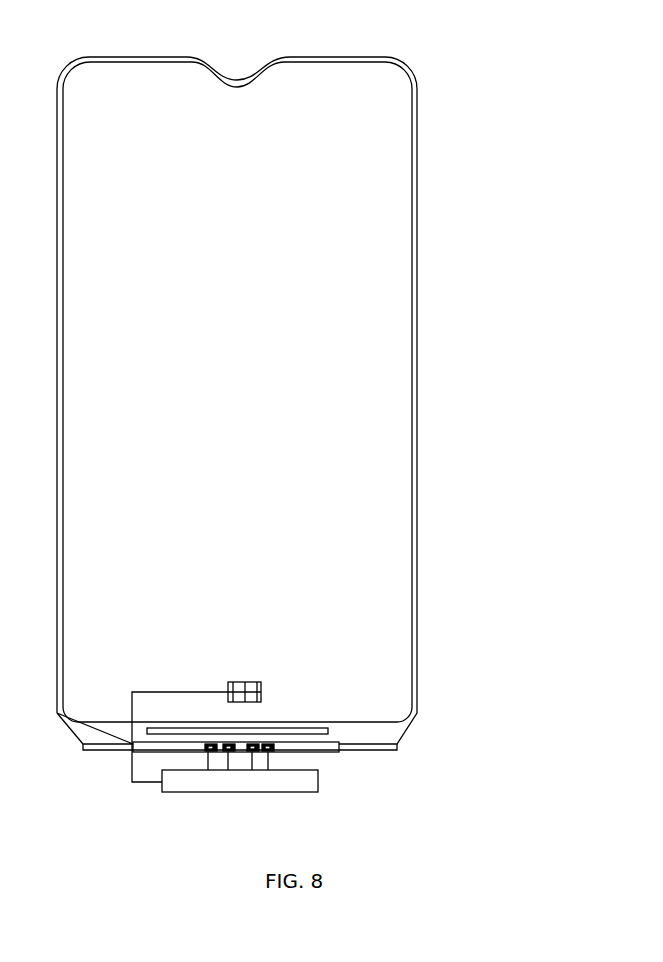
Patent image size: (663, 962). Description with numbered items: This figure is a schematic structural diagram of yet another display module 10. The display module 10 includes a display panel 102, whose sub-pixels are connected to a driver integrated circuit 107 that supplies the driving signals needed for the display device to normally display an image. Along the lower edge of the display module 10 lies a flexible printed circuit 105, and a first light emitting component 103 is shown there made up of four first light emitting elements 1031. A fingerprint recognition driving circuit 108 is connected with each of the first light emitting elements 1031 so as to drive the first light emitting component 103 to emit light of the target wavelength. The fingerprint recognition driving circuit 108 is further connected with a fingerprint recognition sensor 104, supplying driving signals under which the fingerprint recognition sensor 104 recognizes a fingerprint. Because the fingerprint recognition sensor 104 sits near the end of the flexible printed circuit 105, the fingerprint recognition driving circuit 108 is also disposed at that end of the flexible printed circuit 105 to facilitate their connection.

The display module 10 is at (62, 64).
The display panel 102 is at (373, 577).
The first light emitting component 103 is at (432, 768).
The first light emitting elements 1031 is at (273, 747).
The fingerprint recognition sensor 104 is at (262, 690).
The flexible printed circuit 105 is at (180, 753).
The driver integrated circuit 107 is at (155, 735).
The fingerprint recognition driving circuit 108 is at (295, 793).